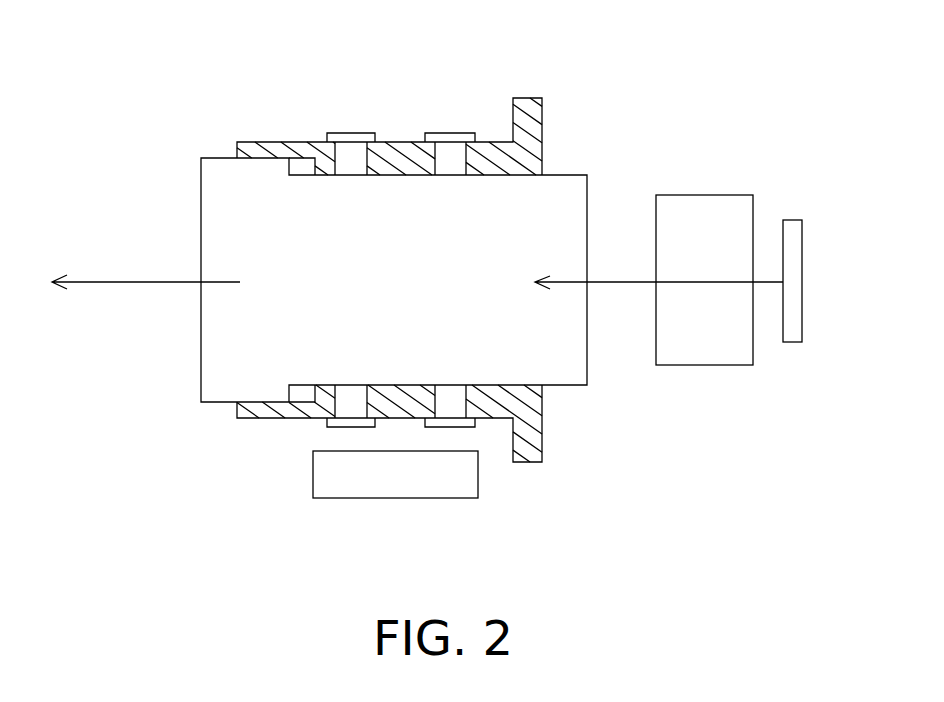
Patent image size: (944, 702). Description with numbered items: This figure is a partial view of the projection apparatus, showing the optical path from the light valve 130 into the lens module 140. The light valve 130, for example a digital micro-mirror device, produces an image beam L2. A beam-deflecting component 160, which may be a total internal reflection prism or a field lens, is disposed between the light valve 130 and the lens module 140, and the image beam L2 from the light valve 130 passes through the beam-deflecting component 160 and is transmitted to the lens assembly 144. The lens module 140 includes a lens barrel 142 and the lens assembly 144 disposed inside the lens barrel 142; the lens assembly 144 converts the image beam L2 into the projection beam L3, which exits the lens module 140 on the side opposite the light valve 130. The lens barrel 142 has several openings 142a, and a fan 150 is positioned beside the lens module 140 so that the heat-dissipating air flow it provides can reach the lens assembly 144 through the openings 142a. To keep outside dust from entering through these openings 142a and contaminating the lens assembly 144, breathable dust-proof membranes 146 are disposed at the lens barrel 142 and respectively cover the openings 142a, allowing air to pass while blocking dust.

The lens module 140 is at (186, 179).
The lens assembly 144 is at (228, 363).
The lens barrel 142 is at (270, 412).
The opening 142a is at (350, 402).
The breathable dust-proof membrane 146 is at (375, 422).
The fan 150 is at (463, 480).
The beam-deflecting component 160 is at (707, 213).
The light valve 130 is at (793, 242).
The image beam L2 is at (620, 283).
The projection beam L3 is at (100, 284).